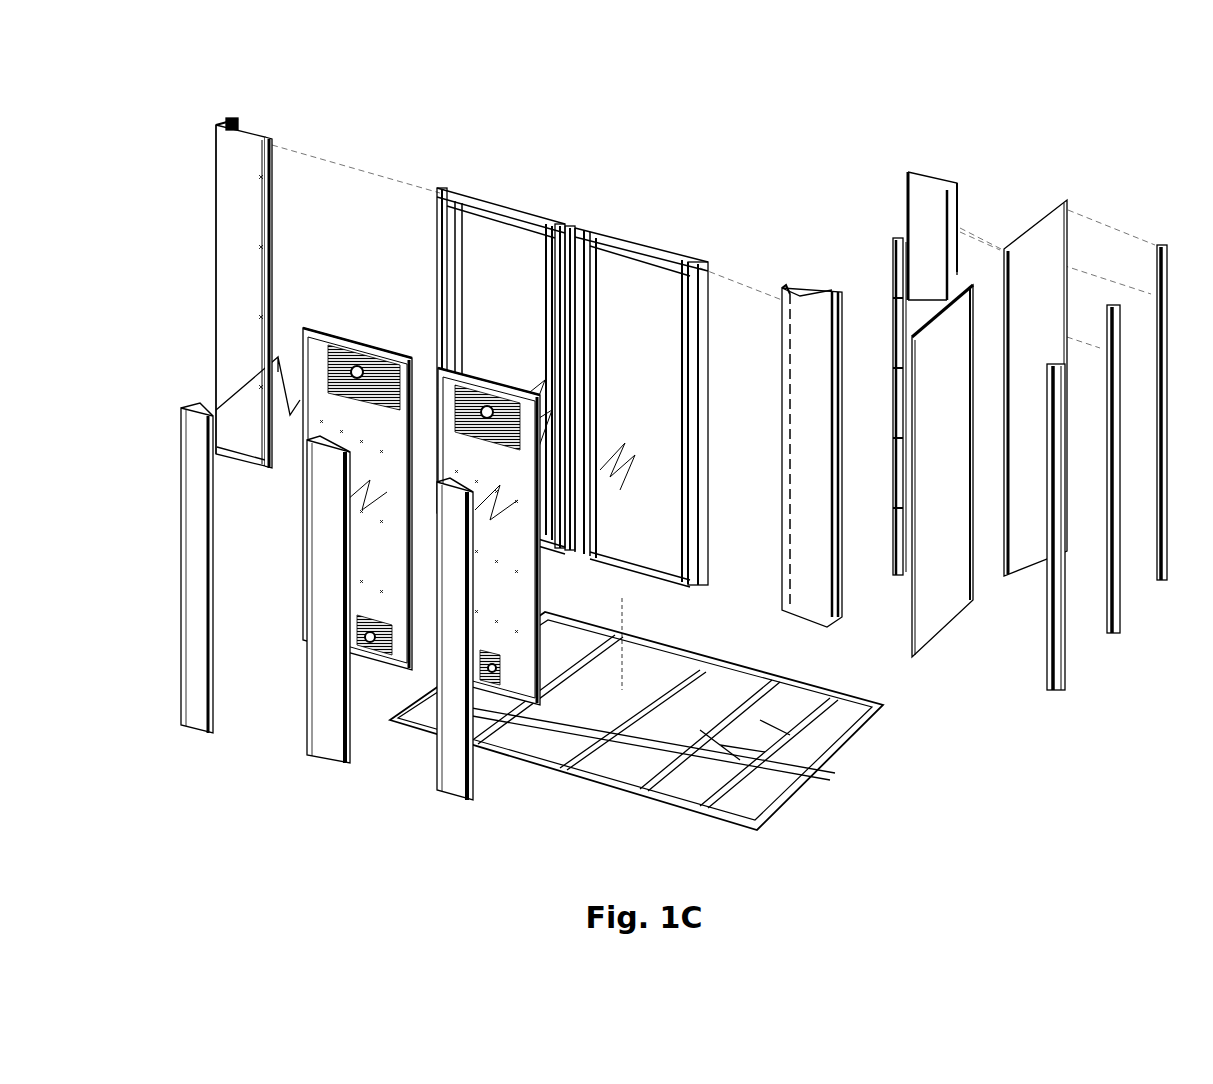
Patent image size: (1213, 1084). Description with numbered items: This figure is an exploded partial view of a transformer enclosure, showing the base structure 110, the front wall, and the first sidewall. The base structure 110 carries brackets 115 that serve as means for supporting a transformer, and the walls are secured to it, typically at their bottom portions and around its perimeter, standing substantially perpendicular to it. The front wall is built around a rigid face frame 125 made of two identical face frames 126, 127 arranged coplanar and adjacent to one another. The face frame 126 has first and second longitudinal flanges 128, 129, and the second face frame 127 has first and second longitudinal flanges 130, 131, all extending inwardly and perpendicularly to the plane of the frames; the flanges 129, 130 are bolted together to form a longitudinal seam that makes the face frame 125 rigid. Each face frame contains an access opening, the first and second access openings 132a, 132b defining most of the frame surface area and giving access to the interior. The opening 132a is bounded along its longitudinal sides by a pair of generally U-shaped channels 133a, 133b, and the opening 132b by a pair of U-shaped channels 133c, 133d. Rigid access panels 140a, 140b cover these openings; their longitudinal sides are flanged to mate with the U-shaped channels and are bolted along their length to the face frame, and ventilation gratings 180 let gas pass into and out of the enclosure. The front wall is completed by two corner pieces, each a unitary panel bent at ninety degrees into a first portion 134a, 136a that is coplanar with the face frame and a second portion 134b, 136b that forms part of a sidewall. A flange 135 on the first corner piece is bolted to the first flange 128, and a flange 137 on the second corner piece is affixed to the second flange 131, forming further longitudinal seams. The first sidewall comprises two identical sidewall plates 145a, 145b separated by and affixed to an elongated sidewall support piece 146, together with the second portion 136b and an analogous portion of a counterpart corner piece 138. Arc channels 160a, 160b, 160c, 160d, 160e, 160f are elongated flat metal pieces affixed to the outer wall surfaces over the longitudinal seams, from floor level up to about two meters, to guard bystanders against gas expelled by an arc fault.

The base structure 110 is at (636, 734).
The brackets 115 is at (738, 716).
The rigid face frame 125 is at (602, 148).
The face frame 126 is at (498, 330).
The second face frame 127 is at (665, 370).
The first longitudinal flange 128 is at (437, 190).
The second longitudinal flange 129 is at (563, 224).
The first longitudinal flange 130 is at (569, 229).
The second longitudinal flange 131 is at (704, 264).
The first access opening 132a is at (520, 394).
The second access opening 132b is at (634, 428).
The U-shaped channel 133a is at (452, 278).
The U-shaped channel 133b is at (548, 302).
The U-shaped channel 133c is at (585, 303).
The U-shaped channel 133d is at (688, 343).
The first portion 134a is at (236, 175).
The second portion 134b is at (230, 127).
The flange 135 is at (270, 136).
The first portion 136a is at (800, 430).
The second portion 136b is at (835, 413).
The flange 137 is at (785, 287).
The counterpart corner piece 138 is at (930, 185).
The first rigid access panel 140a is at (357, 499).
The second rigid access panel 140b is at (489, 536).
The sidewall plate 145a is at (942, 471).
The sidewall plate 145b is at (1035, 388).
The elongated sidewall support piece 146 is at (896, 240).
The arc channel 160a is at (197, 715).
The arc channel 160b is at (325, 740).
The arc channel 160c is at (448, 785).
The arc channel 160d is at (1052, 695).
The arc channel 160e is at (1115, 622).
The arc channel 160f is at (1161, 576).
The ventilation grating 180 is at (350, 365).